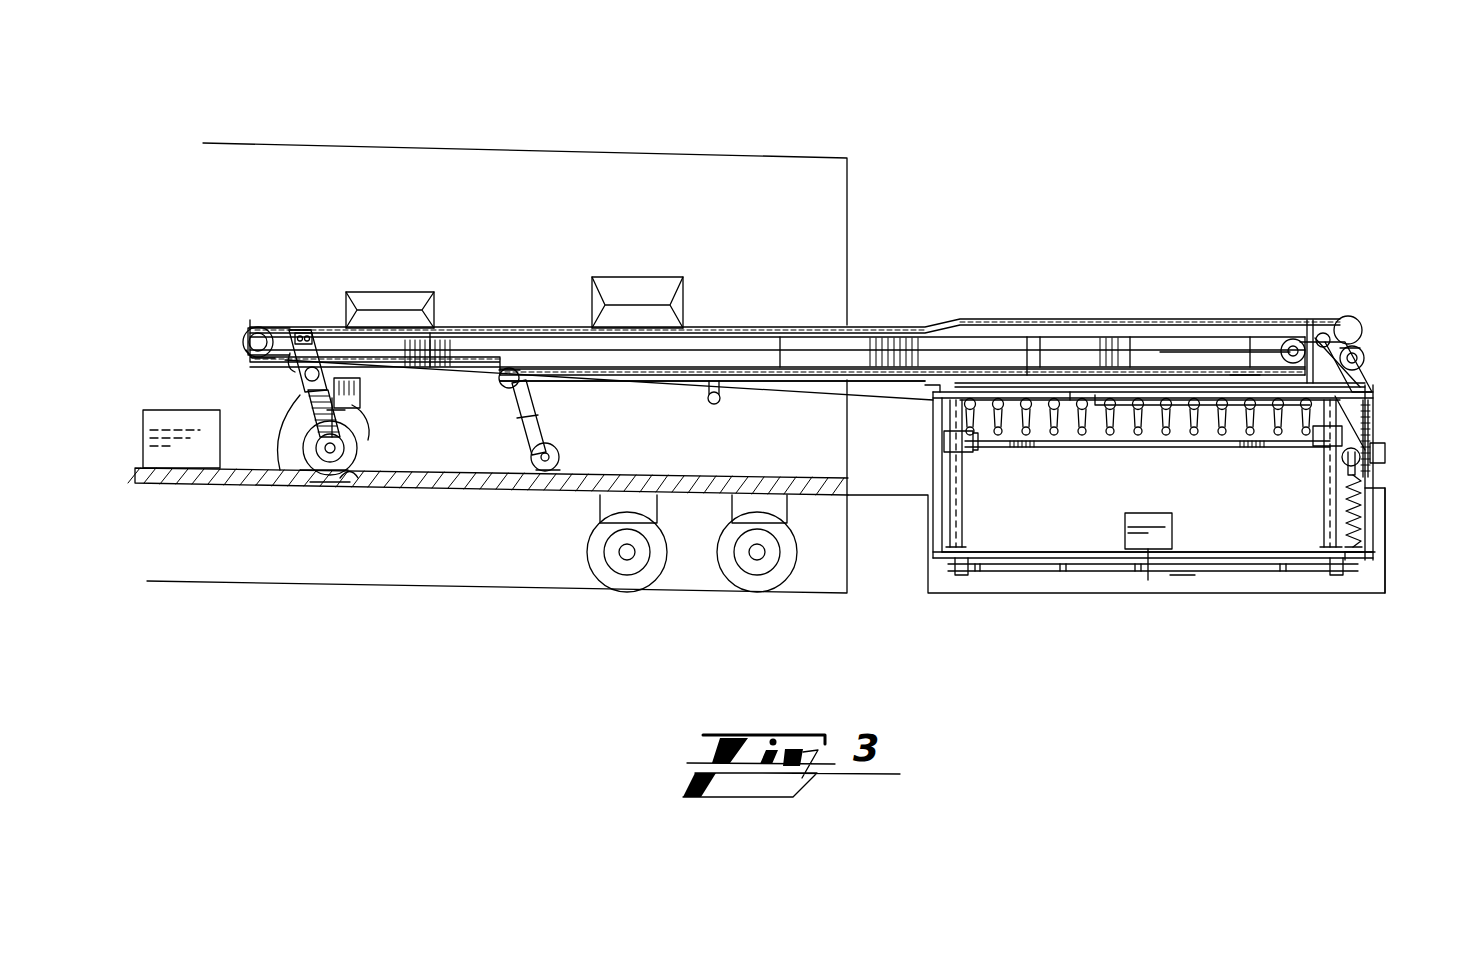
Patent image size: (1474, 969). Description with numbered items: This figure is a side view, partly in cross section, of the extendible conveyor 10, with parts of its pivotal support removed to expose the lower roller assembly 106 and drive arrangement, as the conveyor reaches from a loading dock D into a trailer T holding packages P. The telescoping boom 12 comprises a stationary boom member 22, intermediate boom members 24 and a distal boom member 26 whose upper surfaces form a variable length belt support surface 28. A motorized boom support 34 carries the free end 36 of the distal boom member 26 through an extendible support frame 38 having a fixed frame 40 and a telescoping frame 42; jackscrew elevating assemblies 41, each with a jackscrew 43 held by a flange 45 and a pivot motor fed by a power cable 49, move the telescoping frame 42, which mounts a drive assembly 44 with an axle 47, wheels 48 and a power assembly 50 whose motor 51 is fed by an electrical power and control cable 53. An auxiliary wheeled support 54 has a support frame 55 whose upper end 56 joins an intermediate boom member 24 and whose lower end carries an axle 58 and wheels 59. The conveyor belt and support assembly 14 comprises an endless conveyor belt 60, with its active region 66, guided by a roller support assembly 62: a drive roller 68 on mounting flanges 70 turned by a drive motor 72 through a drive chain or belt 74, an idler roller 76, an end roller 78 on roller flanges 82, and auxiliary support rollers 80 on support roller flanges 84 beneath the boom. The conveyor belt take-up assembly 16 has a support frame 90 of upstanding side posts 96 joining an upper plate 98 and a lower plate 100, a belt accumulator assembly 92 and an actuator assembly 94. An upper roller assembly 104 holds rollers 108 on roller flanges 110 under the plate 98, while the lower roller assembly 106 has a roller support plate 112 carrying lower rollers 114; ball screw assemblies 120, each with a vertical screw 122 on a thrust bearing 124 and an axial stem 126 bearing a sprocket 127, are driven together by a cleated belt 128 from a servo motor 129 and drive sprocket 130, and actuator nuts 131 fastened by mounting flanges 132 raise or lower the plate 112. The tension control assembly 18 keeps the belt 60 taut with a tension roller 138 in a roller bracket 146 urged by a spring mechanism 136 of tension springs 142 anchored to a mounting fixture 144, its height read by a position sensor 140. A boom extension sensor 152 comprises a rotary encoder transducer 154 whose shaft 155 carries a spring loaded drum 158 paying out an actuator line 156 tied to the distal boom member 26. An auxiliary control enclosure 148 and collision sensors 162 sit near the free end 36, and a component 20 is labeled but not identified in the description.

The trailer T is at (788, 158).
The packages P is at (200, 462).
The loading dock D is at (1175, 598).
The extendible conveyor 10 is at (1047, 195).
The telescoping boom 12 is at (1000, 292).
The conveyor belt and support assembly 14 is at (1380, 320).
The conveyor belt take-up assembly 16 is at (1105, 572).
The tension control assembly 18 is at (1382, 388).
The conveyor frame 20 is at (1115, 293).
The stationary boom member 22 is at (1175, 345).
The intermediate boom members 24 is at (655, 328).
The distal boom member 26 is at (447, 328).
The belt support surface 28 is at (862, 330).
The motorized boom support 34 is at (430, 446).
The free end 36 is at (282, 315).
The extendible support frame 38 is at (280, 383).
The fixed frame 40 is at (305, 328).
The jackscrew elevating assemblies 41 is at (302, 470).
The telescoping frame 42 is at (307, 432).
The jackscrew 43 is at (345, 447).
The drive assembly 44 is at (291, 421).
The flange 45 is at (360, 462).
The axle 47 is at (335, 480).
The wheels 48 is at (340, 478).
The power cable 49 is at (348, 430).
The power assembly 50 is at (380, 393).
The motor 51 is at (332, 410).
The electrical power and control cable 53 is at (288, 378).
The auxiliary wheeled supports 54 is at (576, 413).
The auxiliary support frame 55 is at (525, 430).
The upper end 56 is at (530, 380).
The axle 58 is at (560, 466).
The wheels 59 is at (538, 455).
The endless conveyor belt 60 is at (468, 328).
The roller support assembly 62 is at (1360, 318).
The active region 66 is at (760, 330).
The drive roller 68 is at (1370, 330).
The mounting flanges 70 is at (1343, 290).
The drive motor 72 is at (1365, 365).
The drive chain or belt 74 is at (1372, 345).
The idler roller 76 is at (1368, 310).
The end roller 78 is at (267, 317).
The auxiliary support rollers 80 is at (730, 395).
The roller flanges 82 is at (247, 340).
The support roller flanges 84 is at (712, 398).
The support frame 90 is at (1398, 442).
The belt accumulator assembly 92 is at (1215, 535).
The actuator assembly 94 is at (1352, 407).
The upstanding side posts 96 is at (1385, 500).
The upper horizontal plate 98 is at (928, 390).
The lower horizontal plate 100 is at (1037, 560).
The upper roller assembly 104 is at (1040, 386).
The lower roller assembly 106 is at (1095, 455).
The rollers 108 is at (1100, 390).
The roller flanges 110 is at (1090, 388).
The roller support plate 112 is at (1165, 448).
The lower rollers 114 is at (1250, 440).
The ball screw assemblies 120 is at (985, 518).
The vertical screw 122 is at (963, 502).
The thrust bearing 124 is at (968, 545).
The axial stem 126 is at (940, 565).
The sprocket 127 is at (955, 570).
The cleated belt 128 is at (1065, 572).
The servo motor 129 is at (1210, 530).
The drive sprocket 130 is at (1125, 572).
The actuator nut 131 is at (950, 440).
The mounting flanges 132 is at (965, 452).
The spring mechanism 136 is at (1355, 518).
The tension roller 138 is at (1376, 432).
The position sensor 140 is at (1387, 453).
The tension springs 142 is at (1355, 530).
The mounting fixture 144 is at (1370, 548).
The roller bracket 146 is at (1372, 470).
The control enclosure 148 is at (302, 328).
The boom extension sensor 152 is at (1302, 342).
The rotary encoder transducer 154 is at (1230, 374).
The shaft 155 is at (1270, 355).
The actuator line 156 is at (1155, 330).
The spring loaded drum 158 is at (1285, 345).
The collision sensors 162 is at (242, 348).